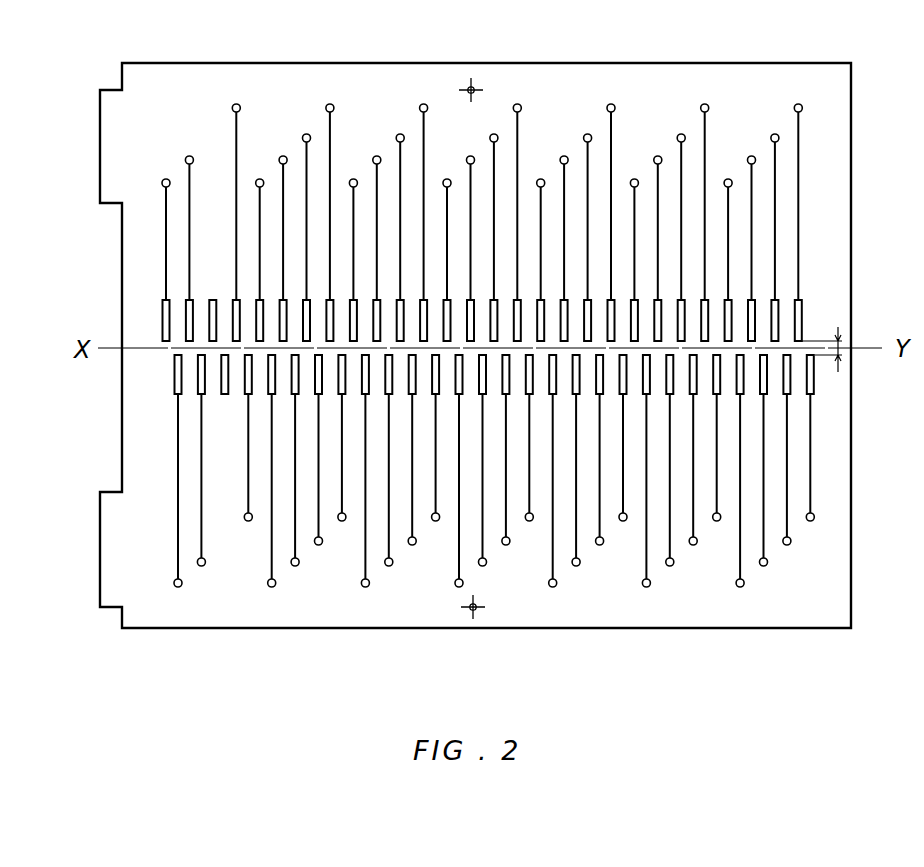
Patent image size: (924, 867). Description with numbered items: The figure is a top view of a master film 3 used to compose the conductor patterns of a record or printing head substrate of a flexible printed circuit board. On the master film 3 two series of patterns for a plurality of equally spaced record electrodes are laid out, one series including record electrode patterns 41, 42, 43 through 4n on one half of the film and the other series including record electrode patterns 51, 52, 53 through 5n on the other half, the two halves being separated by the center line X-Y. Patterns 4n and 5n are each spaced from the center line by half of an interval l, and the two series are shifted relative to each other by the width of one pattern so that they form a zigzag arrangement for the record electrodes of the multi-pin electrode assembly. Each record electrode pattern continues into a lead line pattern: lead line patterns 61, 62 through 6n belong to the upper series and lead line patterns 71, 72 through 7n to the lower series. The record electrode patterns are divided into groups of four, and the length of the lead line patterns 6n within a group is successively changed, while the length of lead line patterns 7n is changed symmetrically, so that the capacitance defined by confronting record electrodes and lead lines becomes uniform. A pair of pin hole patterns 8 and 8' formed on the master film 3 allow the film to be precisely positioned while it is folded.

The master film 3 is at (774, 85).
The record electrode pattern 41 is at (163, 327).
The record electrode pattern 42 is at (188, 302).
The record electrode pattern 43 is at (213, 300).
The record electrode pattern 4n is at (802, 307).
The record electrode pattern 51 is at (173, 379).
The record electrode pattern 52 is at (199, 392).
The record electrode pattern 53 is at (223, 396).
The record electrode pattern 5n is at (815, 389).
The lead line pattern 61 is at (166, 202).
The lead line pattern 62 is at (188, 175).
The lead line pattern 6n is at (798, 198).
The lead line pattern 71 is at (178, 498).
The lead line pattern 72 is at (201, 520).
The lead line pattern 7n is at (813, 465).
The pin hole pattern 8 is at (480, 634).
The pin hole pattern 8' is at (483, 62).
The interval l is at (822, 358).